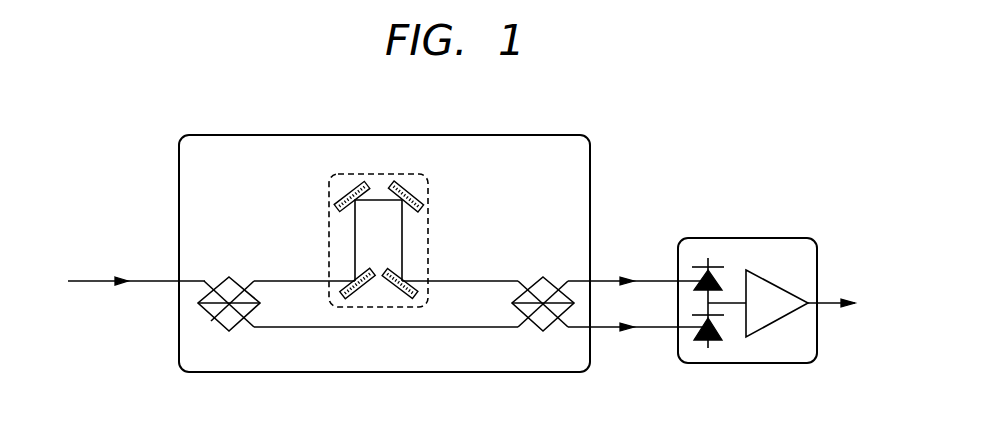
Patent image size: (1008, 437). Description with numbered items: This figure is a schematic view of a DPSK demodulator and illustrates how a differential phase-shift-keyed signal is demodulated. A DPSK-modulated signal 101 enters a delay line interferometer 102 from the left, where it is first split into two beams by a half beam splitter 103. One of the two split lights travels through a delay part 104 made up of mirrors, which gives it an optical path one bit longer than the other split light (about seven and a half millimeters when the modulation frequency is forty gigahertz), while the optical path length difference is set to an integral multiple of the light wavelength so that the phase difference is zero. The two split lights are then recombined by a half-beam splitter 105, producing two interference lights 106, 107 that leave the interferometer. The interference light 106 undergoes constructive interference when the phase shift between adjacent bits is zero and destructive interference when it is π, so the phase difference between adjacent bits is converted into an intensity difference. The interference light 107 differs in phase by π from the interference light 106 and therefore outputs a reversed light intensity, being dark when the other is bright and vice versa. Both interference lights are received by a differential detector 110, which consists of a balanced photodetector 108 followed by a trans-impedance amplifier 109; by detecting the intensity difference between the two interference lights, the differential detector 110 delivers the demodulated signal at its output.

The DPSK-modulated signal 101 is at (100, 281).
The delay line interferometer 102 is at (285, 135).
The half beam splitter 103 is at (239, 277).
The delay part 104 is at (396, 174).
The half-beam splitter 105 is at (538, 277).
The interference light 106 is at (631, 281).
The interference light 107 is at (642, 328).
The balanced photodetector 108 is at (713, 261).
The trans-impedance amplifier 109 is at (770, 328).
The differential detector 110 is at (694, 238).